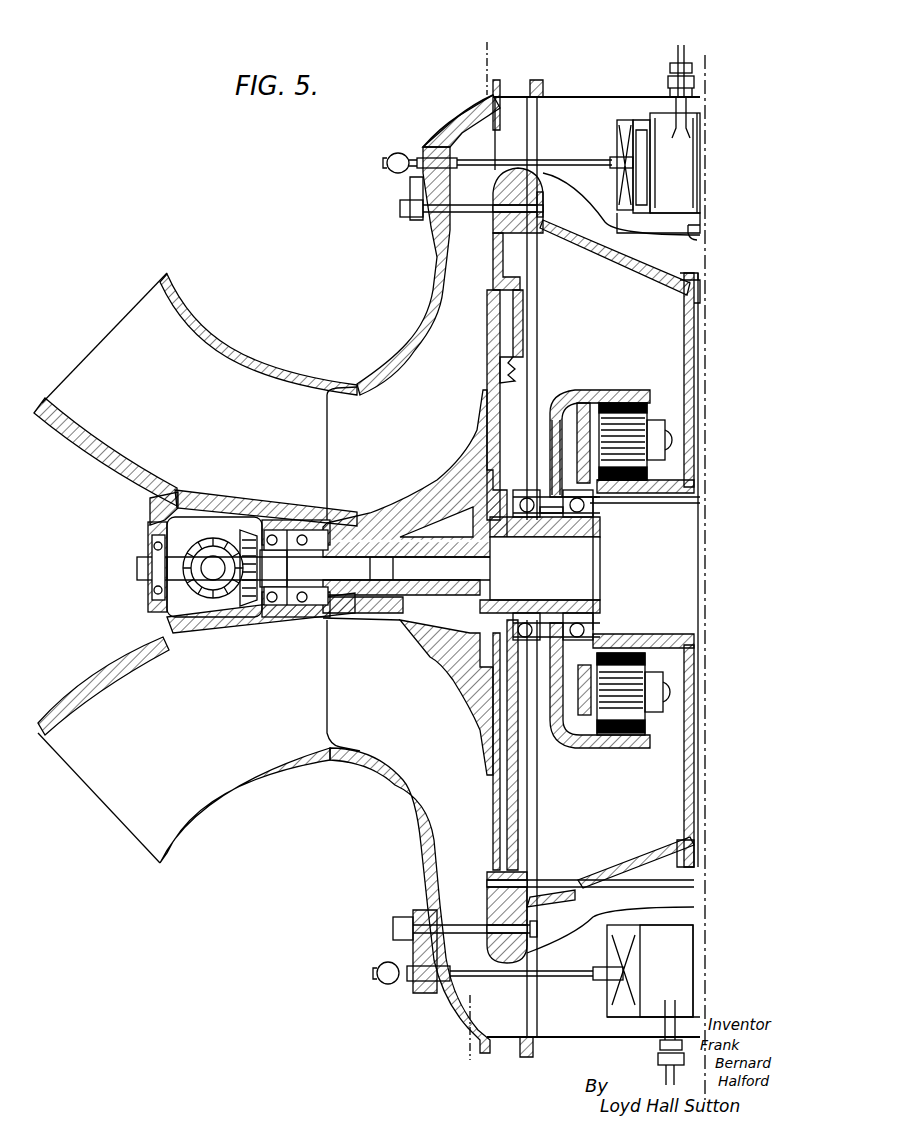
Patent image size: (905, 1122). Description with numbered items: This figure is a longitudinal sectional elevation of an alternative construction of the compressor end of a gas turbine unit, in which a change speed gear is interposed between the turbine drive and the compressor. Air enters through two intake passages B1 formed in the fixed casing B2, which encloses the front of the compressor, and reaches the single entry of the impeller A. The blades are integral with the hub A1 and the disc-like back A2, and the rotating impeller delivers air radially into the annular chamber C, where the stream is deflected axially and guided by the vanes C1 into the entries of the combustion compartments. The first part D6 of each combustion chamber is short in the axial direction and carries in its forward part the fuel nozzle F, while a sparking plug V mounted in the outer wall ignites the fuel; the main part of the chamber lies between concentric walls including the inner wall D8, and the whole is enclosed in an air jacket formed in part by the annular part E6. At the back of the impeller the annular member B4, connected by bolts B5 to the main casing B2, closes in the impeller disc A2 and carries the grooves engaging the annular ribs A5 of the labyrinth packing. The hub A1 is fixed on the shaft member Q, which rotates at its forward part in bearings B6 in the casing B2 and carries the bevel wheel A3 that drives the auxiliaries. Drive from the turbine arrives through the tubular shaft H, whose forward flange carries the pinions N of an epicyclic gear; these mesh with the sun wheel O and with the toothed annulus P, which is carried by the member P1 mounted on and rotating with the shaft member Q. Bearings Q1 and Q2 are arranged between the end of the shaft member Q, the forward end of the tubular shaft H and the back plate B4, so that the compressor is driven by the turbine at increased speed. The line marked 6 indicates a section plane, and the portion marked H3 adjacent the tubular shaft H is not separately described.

The section line 6- 6 is at (480, 62).
The impeller A is at (372, 420).
The hub A1 is at (397, 622).
The disc-like back A2 is at (490, 800).
The bevel wheel A3 is at (247, 592).
The annular ribs A5 is at (507, 357).
The intake passages B1 is at (130, 352).
The fixed casing B2 is at (430, 282).
The annular member B4 is at (513, 315).
The bolts B5 is at (460, 928).
The bearings B6 is at (302, 535).
The annular chamber C is at (490, 130).
The vanes C1 is at (518, 110).
The first part of combustion chamber D6 is at (633, 122).
The inner concentric wall D8 is at (688, 237).
The annular part E6 is at (612, 118).
The nozzle F is at (613, 157).
The tubular shaft H is at (640, 636).
The lower gear H3 is at (595, 745).
The pinions N is at (627, 430).
The sun wheel O is at (627, 487).
The toothed annulus P is at (610, 390).
The member P1 is at (553, 443).
The shaft member Q is at (478, 593).
The bearing Q1 is at (690, 428).
The bearing Q2 is at (528, 515).
The sparking plug V is at (680, 72).